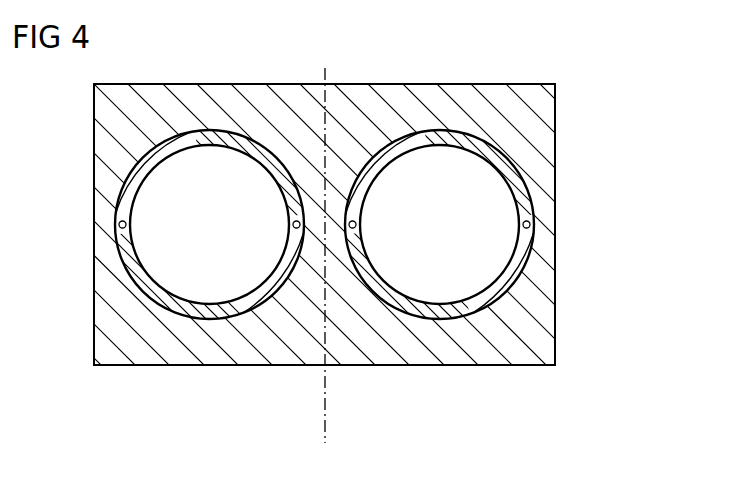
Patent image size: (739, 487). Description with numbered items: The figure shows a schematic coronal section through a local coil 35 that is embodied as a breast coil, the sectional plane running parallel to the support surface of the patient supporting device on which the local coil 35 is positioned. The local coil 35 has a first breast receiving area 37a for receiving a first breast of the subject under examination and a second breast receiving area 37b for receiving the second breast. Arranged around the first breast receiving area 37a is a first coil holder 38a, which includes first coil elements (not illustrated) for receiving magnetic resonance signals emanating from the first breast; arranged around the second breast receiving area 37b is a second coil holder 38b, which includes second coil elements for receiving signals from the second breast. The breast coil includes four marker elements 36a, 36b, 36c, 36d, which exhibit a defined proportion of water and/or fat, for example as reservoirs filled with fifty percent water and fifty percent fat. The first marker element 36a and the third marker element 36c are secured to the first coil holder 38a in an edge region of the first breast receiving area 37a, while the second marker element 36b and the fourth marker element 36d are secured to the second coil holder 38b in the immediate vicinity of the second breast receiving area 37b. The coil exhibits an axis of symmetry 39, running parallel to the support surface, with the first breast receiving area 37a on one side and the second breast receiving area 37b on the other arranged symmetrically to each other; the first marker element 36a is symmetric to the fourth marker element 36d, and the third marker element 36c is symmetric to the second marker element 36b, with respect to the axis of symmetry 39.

The local coil 35 is at (502, 365).
The first marker element 36a is at (118, 233).
The second marker element 36b is at (352, 229).
The third marker element 36c is at (297, 229).
The fourth marker element 36d is at (532, 233).
The first breast receiving area 37a is at (192, 167).
The second breast receiving area 37b is at (457, 167).
The first coil holder 38a is at (255, 153).
The second coil holder 38b is at (393, 152).
The axis of symmetry 39 is at (325, 416).